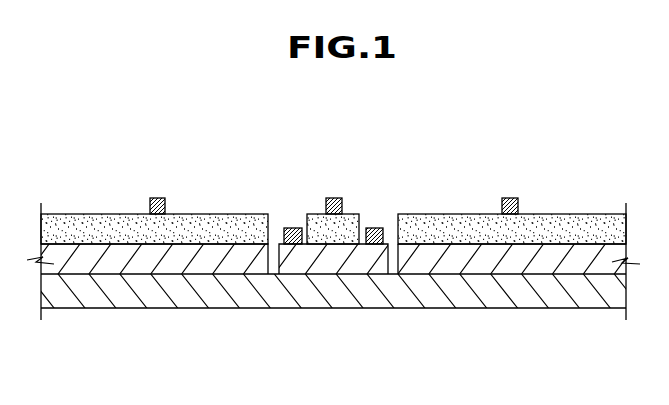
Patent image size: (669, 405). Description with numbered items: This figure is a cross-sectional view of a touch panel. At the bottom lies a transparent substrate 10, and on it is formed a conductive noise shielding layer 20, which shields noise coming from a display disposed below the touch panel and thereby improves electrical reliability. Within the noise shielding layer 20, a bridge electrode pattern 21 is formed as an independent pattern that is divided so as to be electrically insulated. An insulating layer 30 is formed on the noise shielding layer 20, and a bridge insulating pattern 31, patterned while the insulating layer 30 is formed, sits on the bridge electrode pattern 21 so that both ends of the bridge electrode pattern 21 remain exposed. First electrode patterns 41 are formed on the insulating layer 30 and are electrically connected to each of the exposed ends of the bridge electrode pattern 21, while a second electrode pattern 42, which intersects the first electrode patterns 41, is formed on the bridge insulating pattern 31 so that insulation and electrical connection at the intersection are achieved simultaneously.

The transparent substrate 10 is at (530, 297).
The noise shielding layer 20 is at (575, 262).
The bridge electrode pattern 21 is at (330, 265).
The insulating layer 30 is at (587, 224).
The bridge insulating pattern 31 is at (352, 214).
The first electrode pattern 41 is at (290, 228).
The second electrode pattern 42 is at (328, 198).